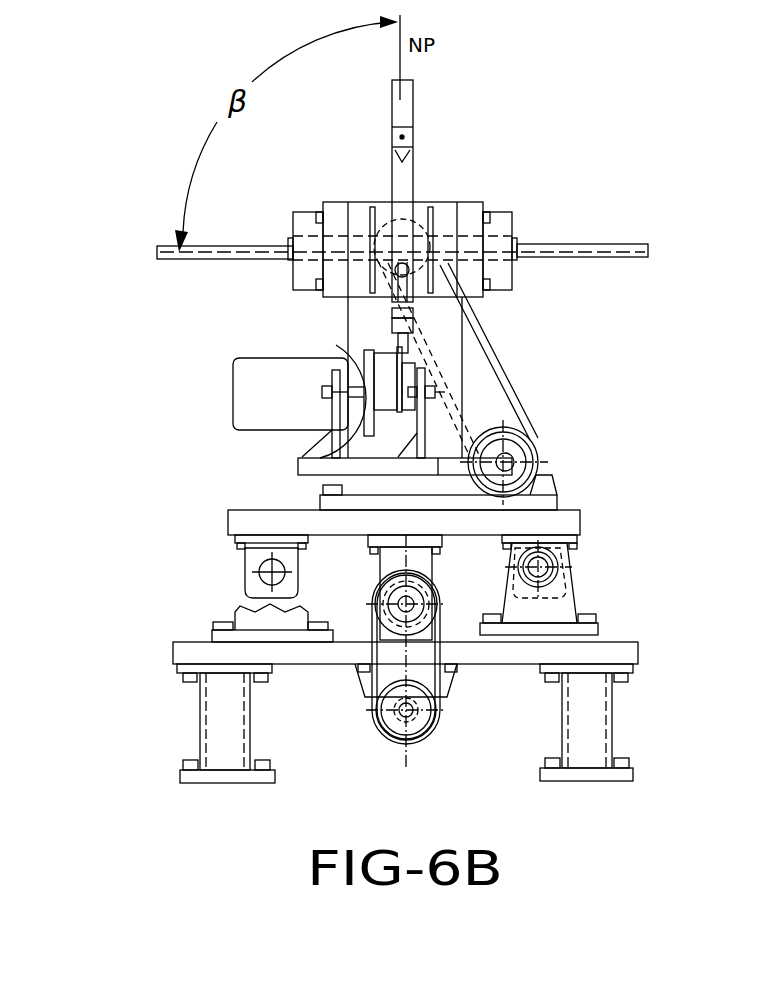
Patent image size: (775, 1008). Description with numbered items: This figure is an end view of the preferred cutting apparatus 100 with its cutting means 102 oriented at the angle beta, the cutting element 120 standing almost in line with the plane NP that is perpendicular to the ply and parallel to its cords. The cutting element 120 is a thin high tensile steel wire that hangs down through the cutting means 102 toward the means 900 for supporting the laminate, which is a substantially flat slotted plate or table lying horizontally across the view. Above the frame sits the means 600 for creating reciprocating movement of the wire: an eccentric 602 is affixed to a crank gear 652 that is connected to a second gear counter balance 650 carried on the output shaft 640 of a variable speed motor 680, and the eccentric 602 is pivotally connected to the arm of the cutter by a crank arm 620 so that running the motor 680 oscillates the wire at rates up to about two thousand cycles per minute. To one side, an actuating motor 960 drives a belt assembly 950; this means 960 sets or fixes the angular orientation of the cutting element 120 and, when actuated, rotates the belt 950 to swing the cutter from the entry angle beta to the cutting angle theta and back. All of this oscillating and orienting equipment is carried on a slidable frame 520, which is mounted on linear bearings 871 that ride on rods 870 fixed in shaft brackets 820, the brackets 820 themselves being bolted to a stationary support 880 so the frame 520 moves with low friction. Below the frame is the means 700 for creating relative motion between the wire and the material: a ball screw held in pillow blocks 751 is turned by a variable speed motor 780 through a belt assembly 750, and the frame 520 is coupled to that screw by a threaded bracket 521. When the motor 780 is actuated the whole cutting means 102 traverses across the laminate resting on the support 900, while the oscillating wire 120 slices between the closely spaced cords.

The cutting apparatus 100 is at (448, 172).
The cutting means 102 is at (518, 215).
The cutting element 120 is at (400, 178).
The means for supporting the laminate 900 is at (658, 238).
The means for creating reciprocating movement 600 is at (222, 378).
The eccentric 602 is at (393, 368).
The crank arm 620 is at (428, 378).
The output shaft 640 is at (365, 385).
The variable speed motor 680 is at (272, 408).
The second gear counter balance 650 is at (300, 458).
The crank gear 652 is at (438, 492).
The belt assembly 950 is at (503, 380).
The actuating motor 960 is at (510, 447).
The slidable frame 520 is at (470, 511).
The threaded bracket 521 is at (390, 553).
The linear bearings 871 is at (255, 589).
The rods 870 is at (545, 563).
The shaft brackets 820 is at (558, 609).
The stationary support 880 is at (628, 653).
The pillow blocks 751 is at (362, 634).
The belt assembly 750 is at (440, 653).
The variable speed motor 780 is at (425, 723).
The means for creating relative motion 700 is at (356, 732).